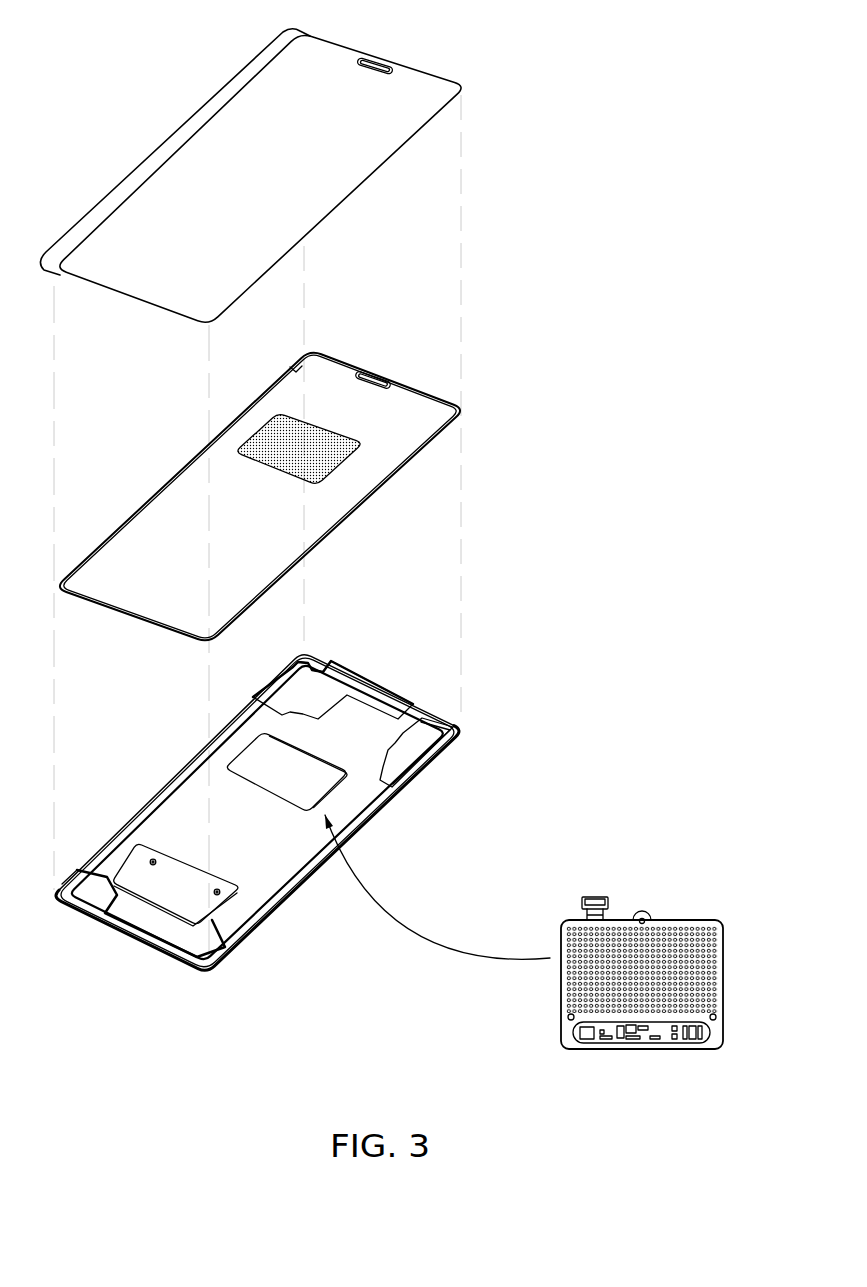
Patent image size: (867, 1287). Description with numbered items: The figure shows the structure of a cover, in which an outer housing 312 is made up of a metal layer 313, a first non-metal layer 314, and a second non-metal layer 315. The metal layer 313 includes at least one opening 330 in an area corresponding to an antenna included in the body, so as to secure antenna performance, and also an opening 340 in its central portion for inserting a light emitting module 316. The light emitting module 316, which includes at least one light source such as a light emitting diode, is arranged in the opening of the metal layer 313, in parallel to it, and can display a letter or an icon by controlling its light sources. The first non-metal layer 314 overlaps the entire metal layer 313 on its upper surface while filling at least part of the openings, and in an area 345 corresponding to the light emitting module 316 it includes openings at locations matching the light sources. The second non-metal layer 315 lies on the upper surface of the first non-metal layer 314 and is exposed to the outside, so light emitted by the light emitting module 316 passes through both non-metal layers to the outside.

The outer housing 312 is at (116, 90).
The metal layer 313 is at (427, 700).
The first non-metal layer 314 is at (462, 412).
The second non-metal layer 315 is at (418, 72).
The light emitting module 316 is at (700, 919).
The opening 330 is at (322, 683).
The opening 340 is at (253, 760).
The area 345 is at (308, 437).